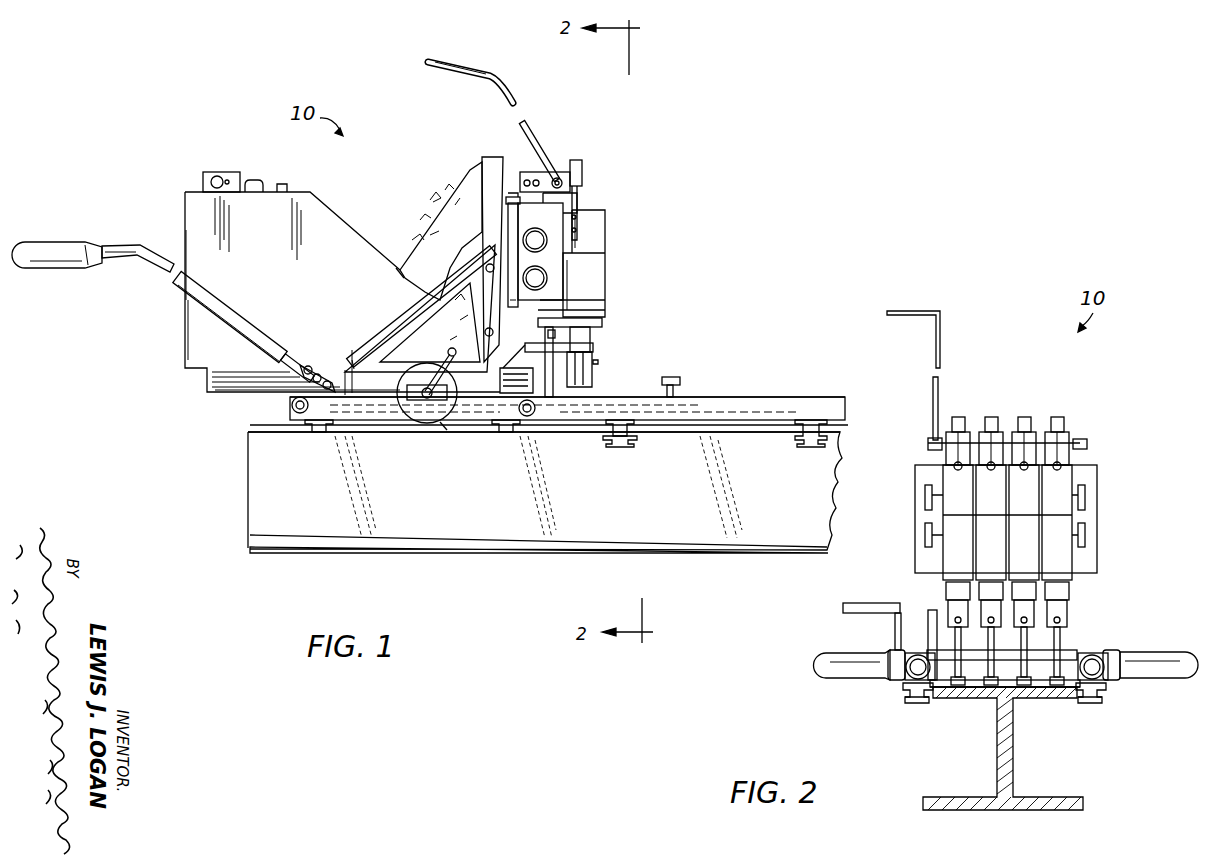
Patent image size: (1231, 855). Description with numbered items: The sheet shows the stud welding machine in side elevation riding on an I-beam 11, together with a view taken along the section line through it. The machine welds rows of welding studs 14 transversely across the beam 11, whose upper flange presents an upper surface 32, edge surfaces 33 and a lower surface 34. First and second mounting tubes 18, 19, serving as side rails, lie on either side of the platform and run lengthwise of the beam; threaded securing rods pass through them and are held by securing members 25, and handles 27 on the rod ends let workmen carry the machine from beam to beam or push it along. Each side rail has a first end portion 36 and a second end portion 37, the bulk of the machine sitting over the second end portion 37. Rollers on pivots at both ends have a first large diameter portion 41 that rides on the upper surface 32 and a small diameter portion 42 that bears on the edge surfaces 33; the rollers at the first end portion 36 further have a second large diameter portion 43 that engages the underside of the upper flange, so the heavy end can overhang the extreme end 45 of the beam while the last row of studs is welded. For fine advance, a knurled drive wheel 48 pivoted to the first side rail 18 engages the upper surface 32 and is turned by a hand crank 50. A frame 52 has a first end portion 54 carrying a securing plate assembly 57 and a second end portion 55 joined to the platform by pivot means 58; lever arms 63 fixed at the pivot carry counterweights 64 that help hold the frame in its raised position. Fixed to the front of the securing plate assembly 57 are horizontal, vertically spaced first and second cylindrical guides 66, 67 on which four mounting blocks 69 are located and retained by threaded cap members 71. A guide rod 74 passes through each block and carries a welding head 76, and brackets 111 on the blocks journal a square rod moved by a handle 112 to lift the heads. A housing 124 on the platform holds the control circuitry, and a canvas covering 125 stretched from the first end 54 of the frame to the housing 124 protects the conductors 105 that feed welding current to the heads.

In FIG. 1, the I-beam 11 is at (510, 532).
In FIG. 2, the I-beam 11 is at (997, 748).
In FIG. 1, the welding studs 14 is at (669, 377).
In FIG. 2, the welding studs 14 is at (1040, 672).
In FIG. 1, the first mounting tube 18 is at (621, 397).
In FIG. 2, the first mounting tube 18 is at (905, 685).
In FIG. 2, the second mounting tube 19 is at (1104, 686).
In FIG. 2, the securing members 25 is at (1097, 653).
In FIG. 2, the handles 27 is at (817, 653).
In FIG. 2, the upper surface 32 is at (970, 680).
In FIG. 2, the edge surfaces 33 is at (943, 693).
In FIG. 2, the lower surface 34 is at (957, 688).
In FIG. 1, the first end portion 36 is at (741, 397).
In FIG. 1, the second end portion 37 is at (392, 408).
In FIG. 1, the first large diameter portion 41 is at (308, 422).
In FIG. 2, the first large diameter portion 41 is at (1100, 684).
In FIG. 1, the small diameter portion 42 is at (313, 431).
In FIG. 2, the small diameter portion 42 is at (1096, 700).
In FIG. 1, the second large diameter portion 43 is at (630, 442).
In FIG. 2, the second large diameter portion 43 is at (1093, 704).
In FIG. 1, the extreme end of the beam 45 is at (249, 520).
In FIG. 1, the knurled drive wheel 48 is at (416, 369).
In FIG. 2, the knurled drive wheel 48 is at (928, 613).
In FIG. 1, the hand crank 50 is at (444, 427).
In FIG. 1, the frame 52 is at (400, 317).
In FIG. 1, the first end portion of the frame 54 is at (466, 273).
In FIG. 1, the second end portion of the frame 55 is at (334, 362).
In FIG. 1, the securing plate assembly 57 is at (514, 227).
In FIG. 1, the pivot means 58 is at (310, 363).
In FIG. 1, the lever arms 63 is at (145, 250).
In FIG. 1, the counterweights 64 is at (48, 244).
In FIG. 2, the first cylindrical guide 66 is at (973, 490).
In FIG. 2, the second cylindrical guide 67 is at (983, 530).
In FIG. 1, the mounting blocks 69 is at (516, 203).
In FIG. 1, the threaded cap members 71 is at (540, 278).
In FIG. 2, the threaded cap members 71 is at (925, 492).
In FIG. 1, the guide rod 74 is at (539, 318).
In FIG. 1, the welding head 76 is at (599, 281).
In FIG. 2, the welding head 76 is at (977, 518).
In FIG. 1, the conductors 105 is at (400, 275).
In FIG. 1, the brackets 111 is at (548, 173).
In FIG. 1, the handle 112 is at (514, 101).
In FIG. 2, the handle 112 is at (933, 358).
In FIG. 1, the housing 124 is at (208, 215).
In FIG. 1, the canvas covering 125 is at (418, 236).